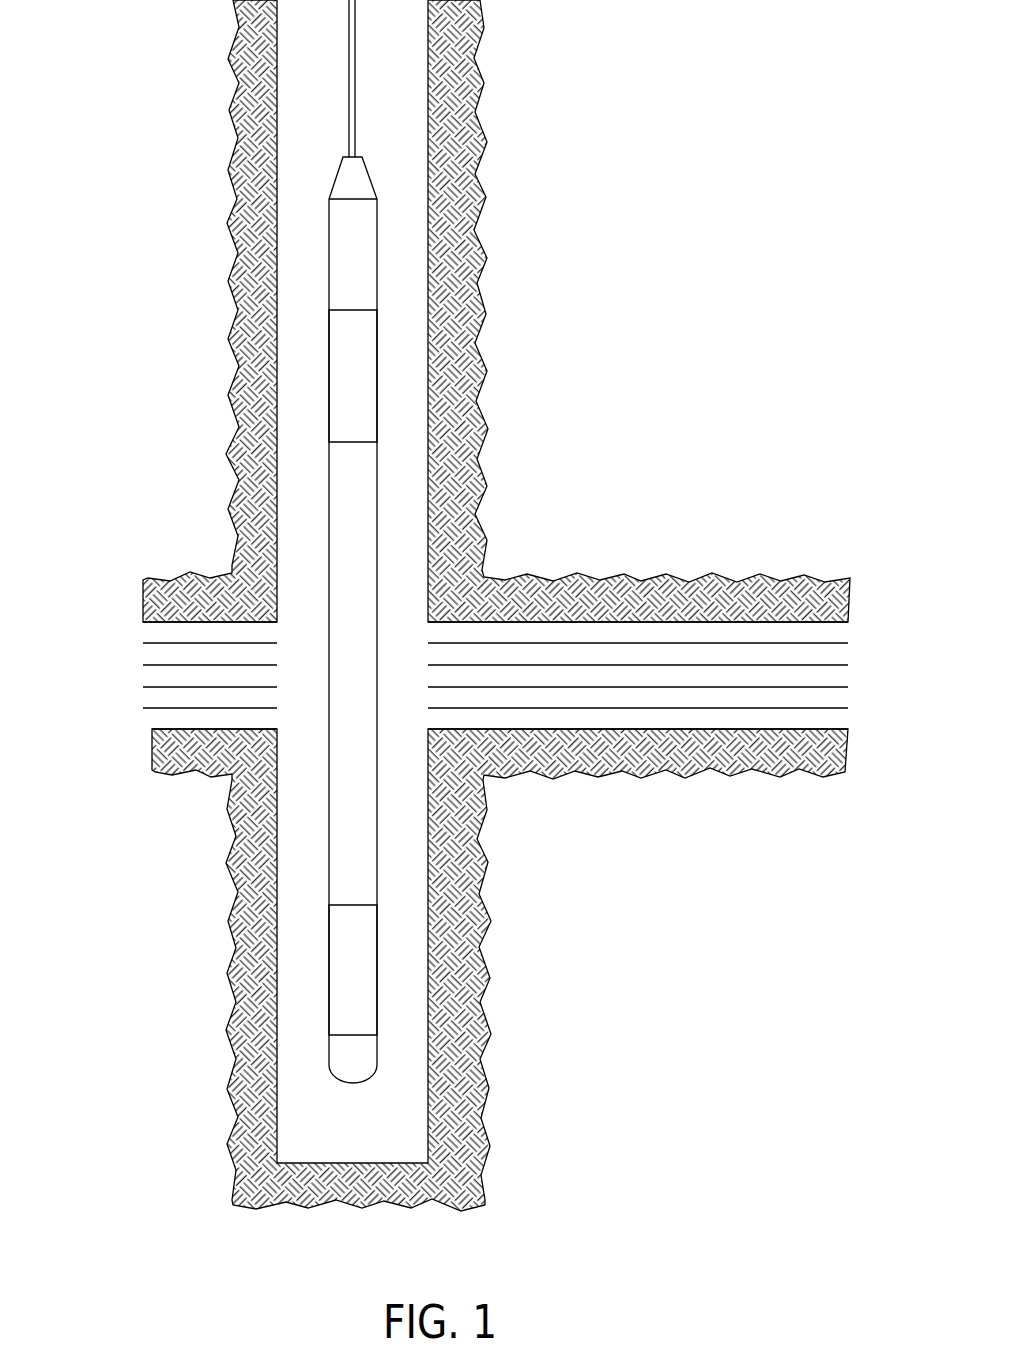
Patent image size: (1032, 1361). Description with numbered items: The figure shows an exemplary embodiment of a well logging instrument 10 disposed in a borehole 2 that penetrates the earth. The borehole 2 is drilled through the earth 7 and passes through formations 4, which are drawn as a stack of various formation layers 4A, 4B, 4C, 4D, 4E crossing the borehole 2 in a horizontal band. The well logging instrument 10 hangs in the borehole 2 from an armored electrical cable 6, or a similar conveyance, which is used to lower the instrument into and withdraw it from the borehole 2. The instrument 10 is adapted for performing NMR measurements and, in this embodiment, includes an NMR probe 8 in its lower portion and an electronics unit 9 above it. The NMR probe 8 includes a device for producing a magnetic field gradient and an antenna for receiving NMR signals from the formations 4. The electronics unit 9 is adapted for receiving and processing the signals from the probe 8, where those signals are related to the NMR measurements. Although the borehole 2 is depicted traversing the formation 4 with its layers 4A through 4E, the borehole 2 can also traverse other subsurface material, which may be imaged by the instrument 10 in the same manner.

The borehole 2 is at (413, 55).
The formations 4 is at (474, 669).
The formation layer 4A is at (840, 630).
The formation layer 4B is at (835, 652).
The formation layer 4C is at (837, 676).
The formation layer 4D is at (842, 698).
The formation layer 4E is at (843, 722).
The armored electrical cable 6 is at (347, 78).
The earth 7 is at (455, 962).
The NMR probe 8 is at (343, 974).
The electronics unit 9 is at (343, 367).
The well logging instrument 10 is at (357, 620).